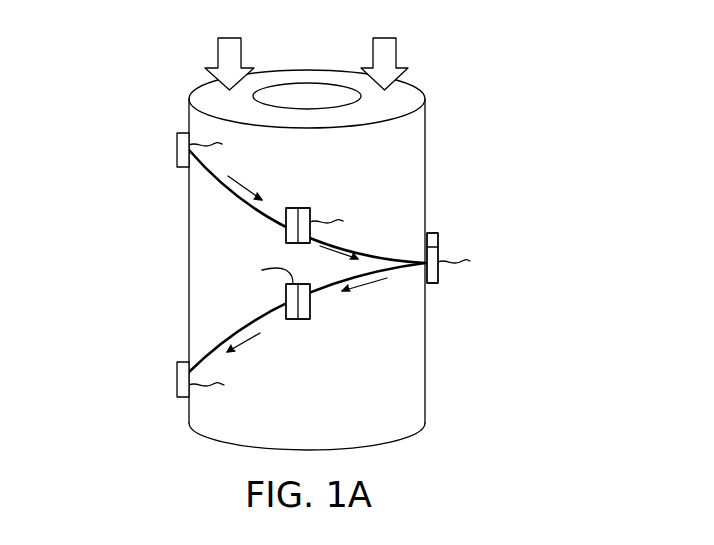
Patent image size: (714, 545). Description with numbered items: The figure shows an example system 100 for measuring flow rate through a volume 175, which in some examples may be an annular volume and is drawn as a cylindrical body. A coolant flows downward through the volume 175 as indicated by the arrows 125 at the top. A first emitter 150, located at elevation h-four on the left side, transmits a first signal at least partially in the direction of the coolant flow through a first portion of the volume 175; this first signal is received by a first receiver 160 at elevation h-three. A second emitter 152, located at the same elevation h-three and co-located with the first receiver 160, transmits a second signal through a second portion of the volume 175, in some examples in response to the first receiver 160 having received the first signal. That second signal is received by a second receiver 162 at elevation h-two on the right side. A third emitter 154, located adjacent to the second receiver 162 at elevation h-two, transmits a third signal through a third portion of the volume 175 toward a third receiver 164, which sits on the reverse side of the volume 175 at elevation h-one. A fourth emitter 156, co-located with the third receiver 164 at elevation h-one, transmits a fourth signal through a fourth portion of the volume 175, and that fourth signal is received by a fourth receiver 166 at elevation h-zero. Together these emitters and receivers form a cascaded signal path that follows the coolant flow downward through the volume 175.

The system 100 is at (309, 241).
The arrows 125 is at (217, 53).
The first emitter 150 is at (177, 151).
The second emitter 152 is at (305, 208).
The third emitter 154 is at (438, 240).
The fourth emitter 156 is at (286, 298).
The first receiver 160 is at (286, 236).
The second receiver 162 is at (438, 277).
The third receiver 164 is at (310, 303).
The fourth receiver 166 is at (177, 379).
The volume 175 is at (426, 153).